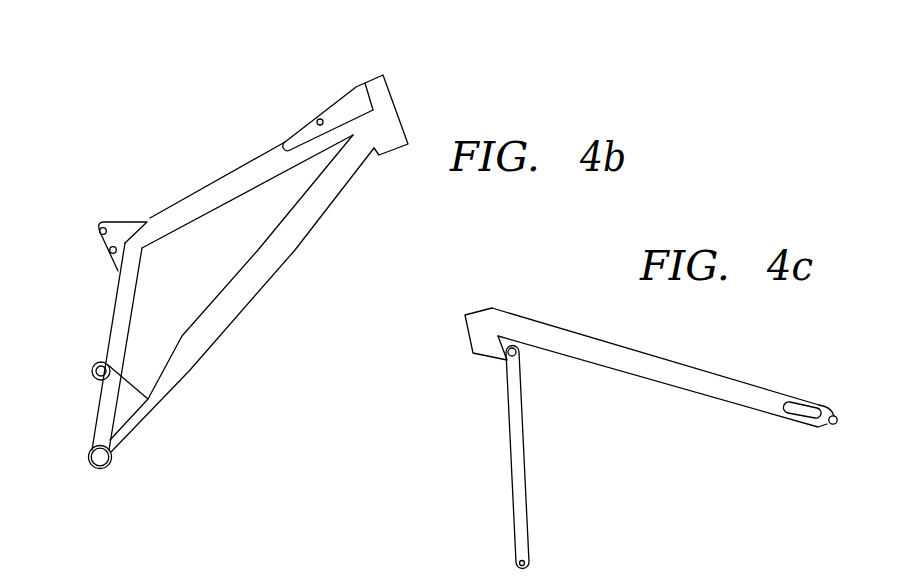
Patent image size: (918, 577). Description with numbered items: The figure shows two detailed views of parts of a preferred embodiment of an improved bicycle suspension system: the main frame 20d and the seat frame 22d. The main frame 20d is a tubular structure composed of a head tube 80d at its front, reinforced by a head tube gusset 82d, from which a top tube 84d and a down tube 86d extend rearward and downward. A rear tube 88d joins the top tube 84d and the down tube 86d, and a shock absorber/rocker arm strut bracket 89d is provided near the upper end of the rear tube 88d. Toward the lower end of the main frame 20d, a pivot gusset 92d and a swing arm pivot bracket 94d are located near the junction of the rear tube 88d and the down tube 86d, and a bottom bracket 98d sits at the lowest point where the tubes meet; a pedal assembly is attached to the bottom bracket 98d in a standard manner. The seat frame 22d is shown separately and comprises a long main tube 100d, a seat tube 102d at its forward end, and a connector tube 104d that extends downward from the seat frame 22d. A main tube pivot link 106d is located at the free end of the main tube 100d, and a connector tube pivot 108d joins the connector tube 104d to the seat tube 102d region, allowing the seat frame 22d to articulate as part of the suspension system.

In FIG. 4b, the main frame 20d is at (224, 379).
In FIG. 4b, the head tube 80d is at (402, 117).
In FIG. 4b, the head tube gusset 82d is at (335, 93).
In FIG. 4b, the top tube 84d is at (201, 162).
In FIG. 4b, the down tube 86d is at (285, 262).
In FIG. 4b, the rear tube 88d is at (107, 320).
In FIG. 4b, the shock absorber/rocker arm strut bracket 89d is at (110, 253).
In FIG. 4b, the pivot gusset 92d is at (123, 417).
In FIG. 4b, the swing arm pivot bracket 94d is at (92, 378).
In FIG. 4b, the bottom bracket 98d is at (102, 469).
In FIG. 4c, the seat frame 22d is at (530, 296).
In FIG. 4c, the main tube 100d is at (675, 362).
In FIG. 4c, the seat tube 102d is at (465, 346).
In FIG. 4c, the connector tube 104d is at (530, 525).
In FIG. 4c, the main tube pivot link 106d is at (836, 416).
In FIG. 4c, the connector tube pivot 108d is at (518, 348).